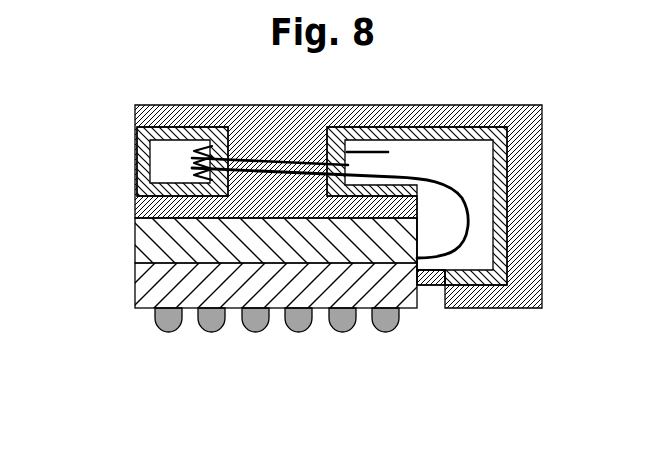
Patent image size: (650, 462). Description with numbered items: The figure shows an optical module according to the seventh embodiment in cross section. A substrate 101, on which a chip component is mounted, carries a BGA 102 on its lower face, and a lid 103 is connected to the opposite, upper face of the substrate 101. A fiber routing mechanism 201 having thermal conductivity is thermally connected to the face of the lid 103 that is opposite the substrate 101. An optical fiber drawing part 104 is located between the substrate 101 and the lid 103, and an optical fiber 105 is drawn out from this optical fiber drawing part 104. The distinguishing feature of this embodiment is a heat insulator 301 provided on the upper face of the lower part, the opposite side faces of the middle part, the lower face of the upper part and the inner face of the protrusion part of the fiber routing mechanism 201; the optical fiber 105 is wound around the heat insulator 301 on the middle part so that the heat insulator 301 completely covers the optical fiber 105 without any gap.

The substrate 101 is at (135, 297).
The BGA 102 is at (167, 333).
The lid 103 is at (135, 242).
The optical fiber drawing part 104 is at (410, 253).
The optical fiber 105 is at (472, 197).
The fiber routing mechanism 201 is at (135, 113).
The heat insulator 301 is at (500, 130).